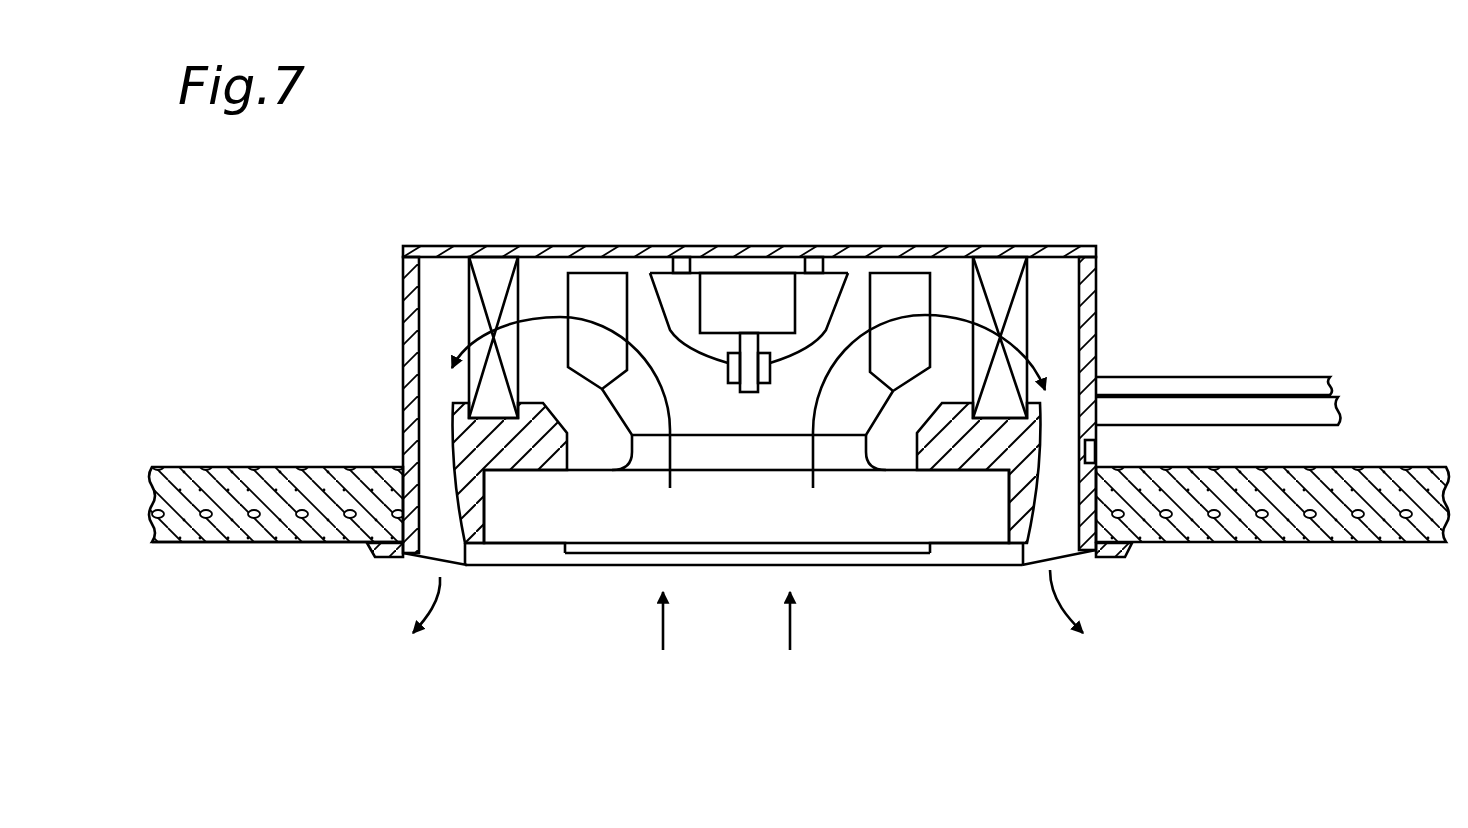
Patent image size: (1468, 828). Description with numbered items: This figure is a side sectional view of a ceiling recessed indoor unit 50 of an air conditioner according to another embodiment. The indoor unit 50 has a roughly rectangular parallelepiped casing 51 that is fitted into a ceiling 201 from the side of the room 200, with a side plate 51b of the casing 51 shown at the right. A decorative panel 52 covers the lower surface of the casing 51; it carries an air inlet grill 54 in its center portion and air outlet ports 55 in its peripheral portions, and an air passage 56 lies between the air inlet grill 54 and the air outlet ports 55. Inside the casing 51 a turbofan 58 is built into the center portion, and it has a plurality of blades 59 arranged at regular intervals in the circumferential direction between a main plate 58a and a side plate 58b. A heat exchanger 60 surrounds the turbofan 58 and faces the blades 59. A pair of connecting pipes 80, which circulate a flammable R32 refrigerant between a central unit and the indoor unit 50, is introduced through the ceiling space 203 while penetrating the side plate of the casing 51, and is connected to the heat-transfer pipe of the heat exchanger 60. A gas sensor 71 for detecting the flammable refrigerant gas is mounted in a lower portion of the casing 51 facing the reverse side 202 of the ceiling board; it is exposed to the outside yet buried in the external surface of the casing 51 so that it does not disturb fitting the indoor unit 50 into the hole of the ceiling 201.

The indoor unit 50 is at (858, 397).
The casing 51 is at (835, 348).
The side wall of casing 51b is at (1096, 300).
The decorative panel 52 is at (383, 557).
The air inlet grill 54 is at (587, 560).
The air outlet ports 55 is at (452, 552).
The air passage 56 is at (547, 283).
The turbofan 58 is at (756, 397).
The main plate 58a is at (838, 283).
The side plate 58b is at (893, 395).
The blades 59 is at (597, 277).
The heat exchanger 60 is at (490, 270).
The gas sensor 71 is at (1096, 447).
The connecting pipes 80 is at (1310, 372).
The room 200 is at (740, 763).
The ceiling 201 is at (190, 543).
The reverse side of ceiling board 202 is at (192, 467).
The ceiling space 203 is at (234, 310).